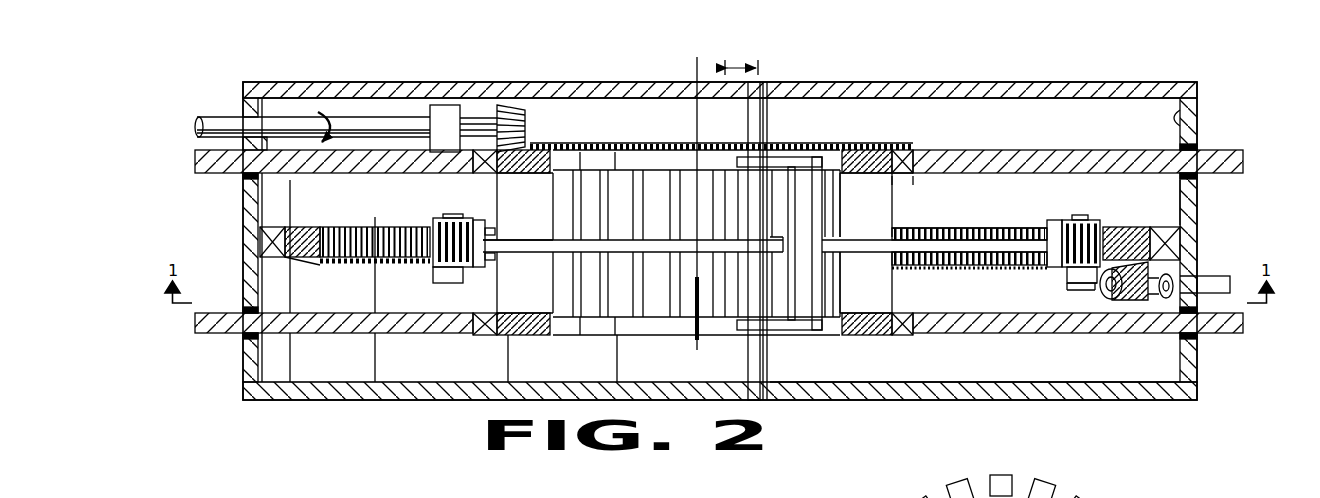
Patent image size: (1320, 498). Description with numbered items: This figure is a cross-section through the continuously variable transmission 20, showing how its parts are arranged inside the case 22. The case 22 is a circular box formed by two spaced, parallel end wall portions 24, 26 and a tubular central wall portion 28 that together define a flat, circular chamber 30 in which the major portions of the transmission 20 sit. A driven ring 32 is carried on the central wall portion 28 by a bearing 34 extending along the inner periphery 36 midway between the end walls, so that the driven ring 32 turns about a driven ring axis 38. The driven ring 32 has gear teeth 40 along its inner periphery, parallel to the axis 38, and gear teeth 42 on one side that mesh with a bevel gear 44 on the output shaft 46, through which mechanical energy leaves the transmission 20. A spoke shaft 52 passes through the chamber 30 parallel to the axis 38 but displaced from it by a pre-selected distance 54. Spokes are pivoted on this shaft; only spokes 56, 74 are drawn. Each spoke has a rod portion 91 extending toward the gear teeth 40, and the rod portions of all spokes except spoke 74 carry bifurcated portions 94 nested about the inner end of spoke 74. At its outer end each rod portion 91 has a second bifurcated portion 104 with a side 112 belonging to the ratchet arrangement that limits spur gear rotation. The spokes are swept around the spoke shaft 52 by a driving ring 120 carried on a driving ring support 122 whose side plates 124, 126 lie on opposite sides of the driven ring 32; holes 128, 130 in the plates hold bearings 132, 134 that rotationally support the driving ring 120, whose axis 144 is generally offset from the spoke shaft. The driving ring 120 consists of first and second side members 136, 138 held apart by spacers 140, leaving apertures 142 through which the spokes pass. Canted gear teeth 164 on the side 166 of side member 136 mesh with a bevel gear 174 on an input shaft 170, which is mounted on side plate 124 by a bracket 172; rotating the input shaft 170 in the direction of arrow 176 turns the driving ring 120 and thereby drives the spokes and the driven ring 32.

The continuously variable transmission 20 is at (1222, 134).
The case 22 is at (1106, 82).
The end wall portion 24 is at (958, 90).
The end wall portion 26 is at (817, 397).
The central wall portion 28 is at (1195, 212).
The chamber 30 is at (1077, 368).
The driven ring 32 is at (1192, 191).
The bearing 34 is at (1168, 245).
The inner periphery 36 is at (1183, 118).
The driven ring axis 38 is at (724, 60).
The gear teeth 40 is at (986, 224).
The gear teeth 42 is at (980, 269).
The bevel gear 44 is at (1138, 302).
The shaft 46 is at (1207, 280).
The spoke shaft 52 is at (761, 122).
The pre-selected distance 54 is at (738, 60).
The spoke 56 is at (966, 256).
The spoke 74 is at (547, 253).
The rod portion 91 is at (535, 237).
The bifurcated portion 94 is at (786, 158).
The second bifurcated portion 104 is at (1137, 223).
The side 112 is at (1072, 290).
The driving ring 120 is at (876, 146).
The driving ring support 122 is at (210, 176).
The side plate 124 is at (218, 149).
The side plate 126 is at (210, 334).
The hole 128 is at (901, 148).
The hole 130 is at (901, 335).
The bearing 132 is at (906, 176).
The bearing 134 is at (962, 266).
The first side member 136 is at (538, 140).
The second side member 138 is at (532, 335).
The spacer 140 is at (540, 196).
The aperture 142 is at (636, 303).
The axis 144 is at (697, 68).
The gear teeth 164 is at (613, 142).
The side 166 is at (572, 142).
The input shaft 170 is at (343, 126).
The bracket 172 is at (446, 112).
The bevel gear 174 is at (511, 124).
The directional arrow 176 is at (330, 110).